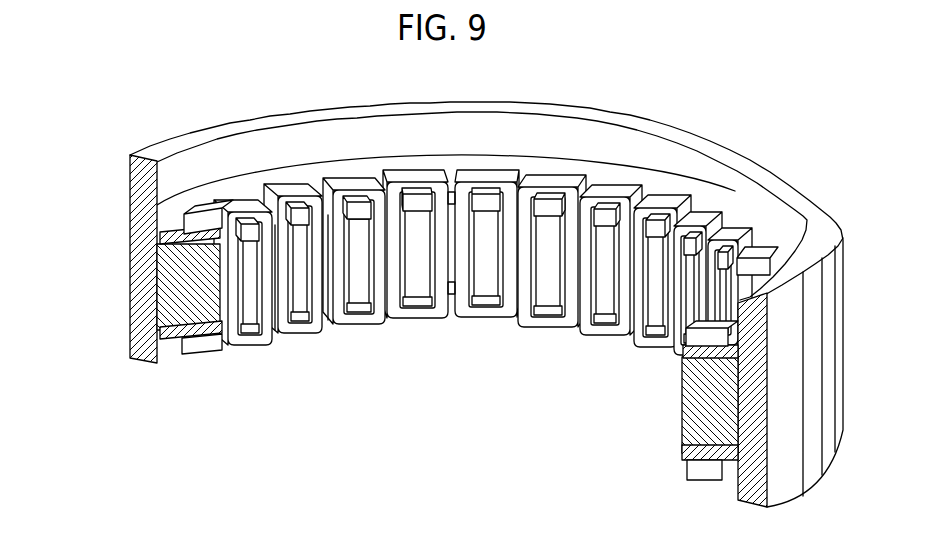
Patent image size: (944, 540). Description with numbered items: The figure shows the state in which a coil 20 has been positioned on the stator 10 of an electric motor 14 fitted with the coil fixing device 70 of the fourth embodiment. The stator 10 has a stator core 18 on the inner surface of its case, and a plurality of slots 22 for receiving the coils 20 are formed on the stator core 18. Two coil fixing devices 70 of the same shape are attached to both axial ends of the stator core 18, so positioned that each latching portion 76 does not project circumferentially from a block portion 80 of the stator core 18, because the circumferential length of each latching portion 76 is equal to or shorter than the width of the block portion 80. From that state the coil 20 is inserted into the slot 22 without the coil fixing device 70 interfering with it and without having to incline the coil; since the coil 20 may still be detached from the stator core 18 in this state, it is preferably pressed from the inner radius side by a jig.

The stator 10 is at (440, 285).
The electric motor 14 is at (155, 134).
The stator core 18 is at (180, 295).
The coil 20 is at (483, 224).
The slot 22 is at (332, 335).
The coil fixing device 70 is at (213, 196).
The latching portion 76 is at (363, 197).
The block portion 80 is at (362, 295).